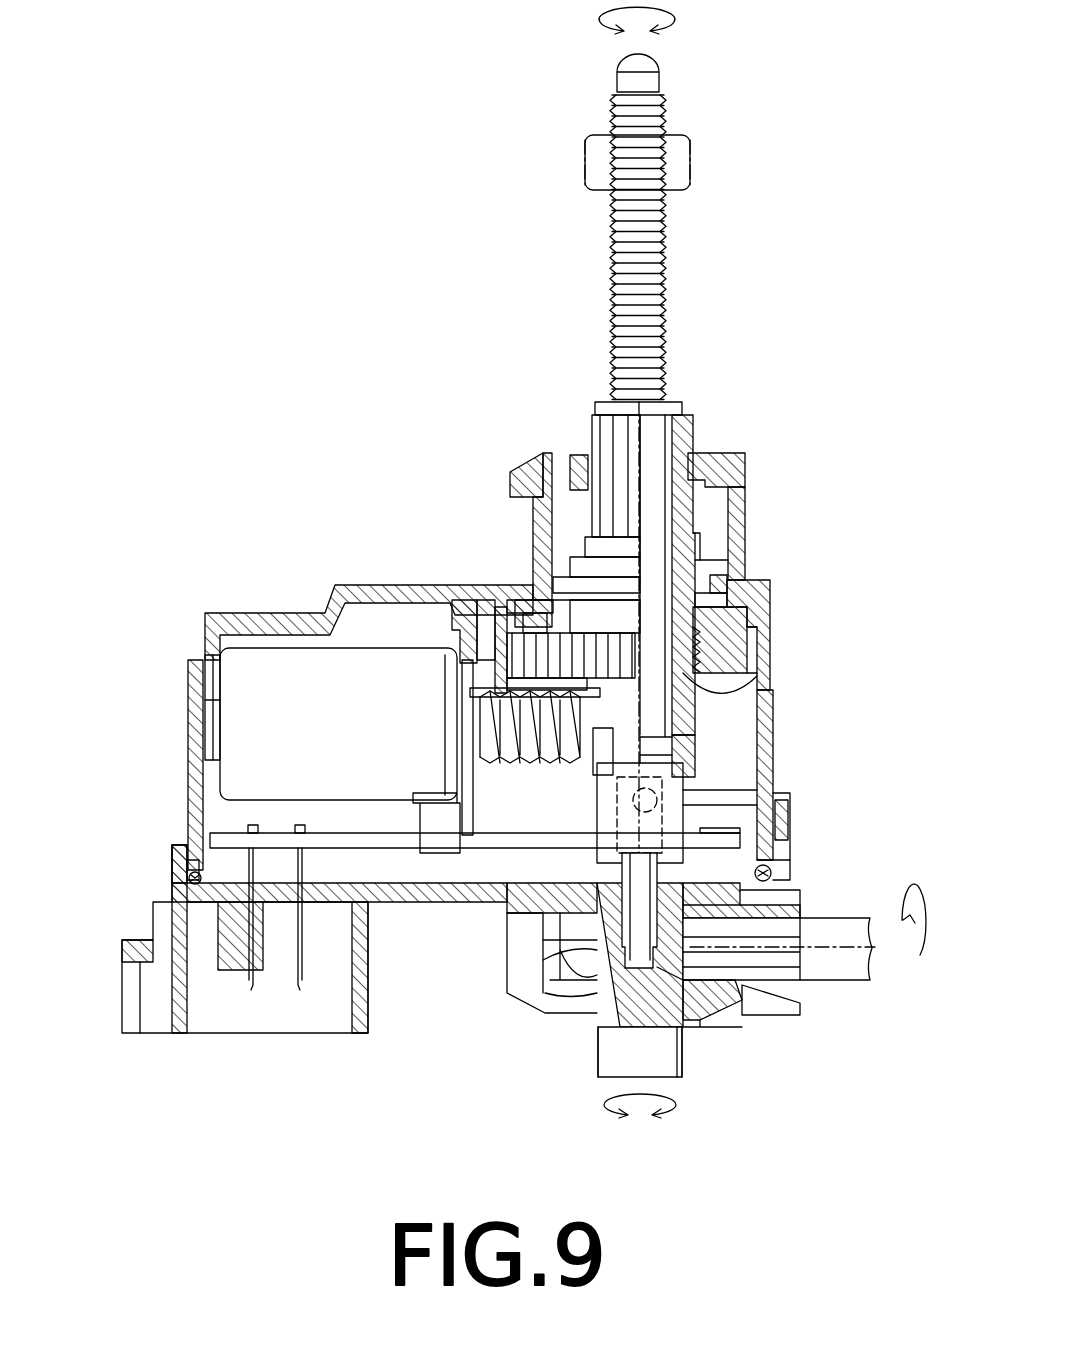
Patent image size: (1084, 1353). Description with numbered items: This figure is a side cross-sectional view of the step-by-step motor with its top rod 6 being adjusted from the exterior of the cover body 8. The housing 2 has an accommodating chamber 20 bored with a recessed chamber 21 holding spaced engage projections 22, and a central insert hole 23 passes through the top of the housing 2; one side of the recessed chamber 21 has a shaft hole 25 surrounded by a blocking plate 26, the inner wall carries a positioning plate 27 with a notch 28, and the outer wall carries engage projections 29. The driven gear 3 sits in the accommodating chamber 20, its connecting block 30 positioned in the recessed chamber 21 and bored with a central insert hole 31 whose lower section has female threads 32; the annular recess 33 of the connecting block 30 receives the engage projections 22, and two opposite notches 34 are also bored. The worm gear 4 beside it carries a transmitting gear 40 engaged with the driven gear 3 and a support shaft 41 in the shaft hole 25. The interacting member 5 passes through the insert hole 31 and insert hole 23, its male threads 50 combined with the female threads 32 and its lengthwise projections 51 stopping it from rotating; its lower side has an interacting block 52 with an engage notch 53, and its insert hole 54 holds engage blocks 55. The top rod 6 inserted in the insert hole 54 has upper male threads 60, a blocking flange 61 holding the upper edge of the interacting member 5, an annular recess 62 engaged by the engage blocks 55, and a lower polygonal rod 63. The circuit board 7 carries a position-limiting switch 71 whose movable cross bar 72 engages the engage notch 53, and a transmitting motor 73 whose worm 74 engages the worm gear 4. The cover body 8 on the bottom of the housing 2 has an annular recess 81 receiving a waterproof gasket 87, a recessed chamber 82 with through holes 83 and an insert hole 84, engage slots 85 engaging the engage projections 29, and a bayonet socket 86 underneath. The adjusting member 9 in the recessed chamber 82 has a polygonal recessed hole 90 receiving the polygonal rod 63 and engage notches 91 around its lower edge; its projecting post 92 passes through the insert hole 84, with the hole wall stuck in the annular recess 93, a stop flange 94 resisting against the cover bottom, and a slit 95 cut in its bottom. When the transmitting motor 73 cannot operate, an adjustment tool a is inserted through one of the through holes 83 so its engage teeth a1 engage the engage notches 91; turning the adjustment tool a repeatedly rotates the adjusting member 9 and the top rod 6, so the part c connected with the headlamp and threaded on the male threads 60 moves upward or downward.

The housing 2 is at (195, 772).
The driven gear 3 is at (572, 567).
The worm gear 4 is at (525, 745).
The interacting member 5 is at (573, 630).
The top rod 6 is at (655, 430).
The circuit board 7 is at (470, 845).
The cover body 8 is at (405, 895).
The adjusting member 9 is at (548, 915).
The accommodating chamber 20 is at (215, 815).
The recessed chamber 21 is at (718, 512).
The engage projections 22 is at (750, 590).
The central insert hole 23 is at (708, 470).
The shaft hole 25 is at (528, 622).
The blocking plate 26 is at (500, 627).
The positioning plate 27 is at (467, 640).
The notch 28 is at (460, 668).
The engage projections 29 is at (790, 840).
The connecting block 30 is at (570, 555).
The central insert hole 31 is at (703, 555).
The female threads 32 is at (735, 620).
The annular recess 33 is at (722, 600).
The notches 34 is at (718, 575).
The transmitting gear 40 is at (486, 640).
The support shaft 41 is at (533, 622).
The male threads 50 is at (770, 690).
The lengthwise projections 51 is at (600, 450).
The interacting block 52 is at (547, 960).
The engage notch 53 is at (790, 810).
The insert hole 54 is at (683, 455).
The engage blocks 55 is at (655, 750).
The male threads 60 is at (665, 305).
The blocking flange 61 is at (670, 412).
The annular recess 62 is at (685, 720).
The polygonal rod 63 is at (745, 992).
The position-limiting switch 71 is at (672, 800).
The movable cross bar 72 is at (672, 760).
The transmitting motor 73 is at (368, 660).
The worm 74 is at (530, 760).
The annular recess 81 is at (185, 866).
The recessed chamber 82 is at (715, 1010).
The through holes 83 is at (760, 1000).
The insert hole 84 is at (688, 1015).
The engage slots 85 is at (770, 860).
The bayonet socket 86 is at (180, 1033).
The waterproof gasket 87 is at (185, 878).
The polygonal recessed hole 90 is at (598, 972).
The engage notches 91 is at (845, 890).
The projecting post 92 is at (595, 1045).
The annular recess 93 is at (595, 1060).
The stop flange 94 is at (686, 1030).
The slit 95 is at (660, 1112).
The adjustment tool a is at (848, 930).
The engage teeth a1 is at (735, 958).
The part connected with the headlamp c is at (690, 150).